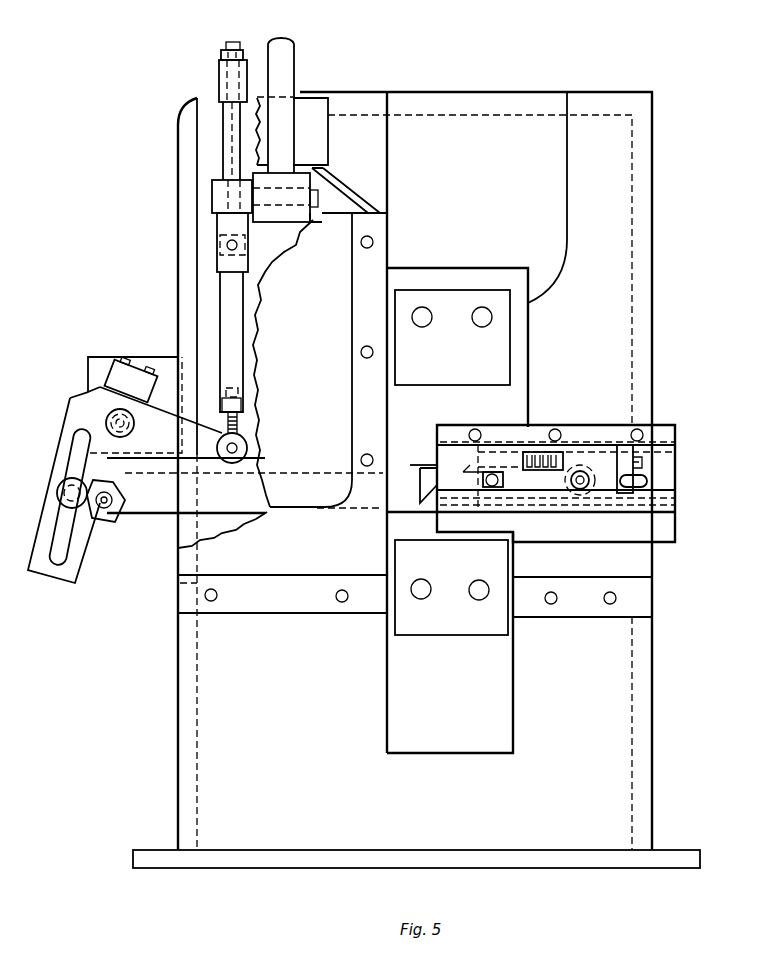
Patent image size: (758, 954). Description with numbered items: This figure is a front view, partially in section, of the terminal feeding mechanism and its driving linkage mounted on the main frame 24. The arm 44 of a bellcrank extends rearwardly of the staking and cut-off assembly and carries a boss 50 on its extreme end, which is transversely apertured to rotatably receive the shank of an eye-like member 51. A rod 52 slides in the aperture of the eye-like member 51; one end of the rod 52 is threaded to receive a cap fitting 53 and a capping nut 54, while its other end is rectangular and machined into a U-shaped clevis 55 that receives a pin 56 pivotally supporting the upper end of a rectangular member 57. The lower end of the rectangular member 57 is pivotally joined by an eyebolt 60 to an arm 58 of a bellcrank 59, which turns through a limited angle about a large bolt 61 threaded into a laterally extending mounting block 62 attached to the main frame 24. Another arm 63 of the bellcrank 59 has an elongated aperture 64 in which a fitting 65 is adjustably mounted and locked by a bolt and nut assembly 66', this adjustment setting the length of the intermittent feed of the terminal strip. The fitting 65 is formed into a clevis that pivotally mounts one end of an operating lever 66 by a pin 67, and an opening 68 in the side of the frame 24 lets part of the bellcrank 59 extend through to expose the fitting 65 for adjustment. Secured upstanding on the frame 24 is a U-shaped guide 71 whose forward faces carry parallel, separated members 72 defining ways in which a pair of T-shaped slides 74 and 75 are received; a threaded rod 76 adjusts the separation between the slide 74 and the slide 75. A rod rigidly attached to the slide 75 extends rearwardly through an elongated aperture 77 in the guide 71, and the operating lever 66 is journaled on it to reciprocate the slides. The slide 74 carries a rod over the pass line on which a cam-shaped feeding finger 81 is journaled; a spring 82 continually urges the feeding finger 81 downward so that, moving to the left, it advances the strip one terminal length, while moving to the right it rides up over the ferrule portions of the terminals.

The main frame 24 is at (640, 662).
The arm 44 is at (285, 92).
The boss 50 is at (285, 218).
The eye-like member 51 is at (222, 192).
The rod 52 is at (232, 138).
The cap fitting 53 is at (230, 80).
The capping nut 54 is at (240, 50).
The U-shaped clevis 55 is at (232, 232).
The pin 56 is at (228, 246).
The rectangular member 57 is at (230, 285).
The arm 58 is at (250, 452).
The bellcrank 59 is at (80, 408).
The eyebolt 60 is at (248, 443).
The large bolt 61 is at (110, 420).
The mounting block 62 is at (90, 355).
The arm 63 is at (70, 570).
The elongated aperture 64 is at (60, 530).
The fitting 65 is at (62, 478).
The operating lever 66 is at (272, 508).
The bolt and nut assembly 66' is at (45, 493).
The pin 67 is at (105, 520).
The opening 68 is at (177, 348).
The U-shaped guide 71 is at (668, 465).
The members 72 is at (668, 430).
The T-shaped slide 74 is at (520, 480).
The T-shaped slide 75 is at (612, 470).
The threaded rod 76 is at (560, 478).
The elongated aperture 77 is at (668, 480).
The feeding finger 81 is at (430, 488).
The spring 82 is at (470, 485).